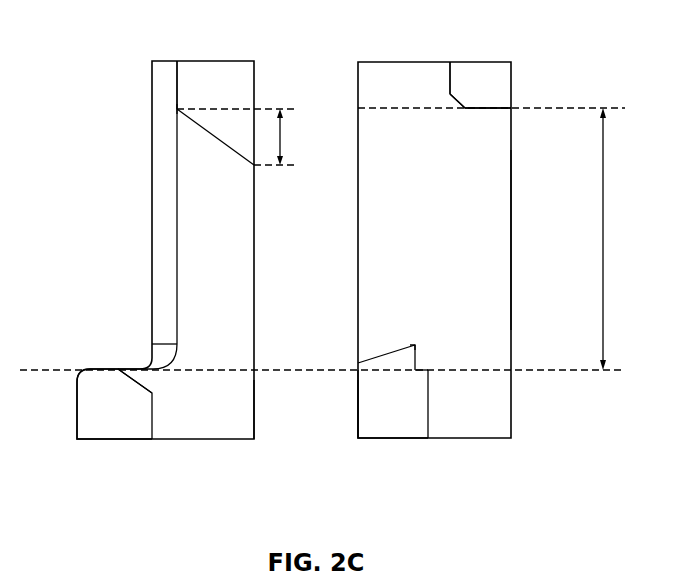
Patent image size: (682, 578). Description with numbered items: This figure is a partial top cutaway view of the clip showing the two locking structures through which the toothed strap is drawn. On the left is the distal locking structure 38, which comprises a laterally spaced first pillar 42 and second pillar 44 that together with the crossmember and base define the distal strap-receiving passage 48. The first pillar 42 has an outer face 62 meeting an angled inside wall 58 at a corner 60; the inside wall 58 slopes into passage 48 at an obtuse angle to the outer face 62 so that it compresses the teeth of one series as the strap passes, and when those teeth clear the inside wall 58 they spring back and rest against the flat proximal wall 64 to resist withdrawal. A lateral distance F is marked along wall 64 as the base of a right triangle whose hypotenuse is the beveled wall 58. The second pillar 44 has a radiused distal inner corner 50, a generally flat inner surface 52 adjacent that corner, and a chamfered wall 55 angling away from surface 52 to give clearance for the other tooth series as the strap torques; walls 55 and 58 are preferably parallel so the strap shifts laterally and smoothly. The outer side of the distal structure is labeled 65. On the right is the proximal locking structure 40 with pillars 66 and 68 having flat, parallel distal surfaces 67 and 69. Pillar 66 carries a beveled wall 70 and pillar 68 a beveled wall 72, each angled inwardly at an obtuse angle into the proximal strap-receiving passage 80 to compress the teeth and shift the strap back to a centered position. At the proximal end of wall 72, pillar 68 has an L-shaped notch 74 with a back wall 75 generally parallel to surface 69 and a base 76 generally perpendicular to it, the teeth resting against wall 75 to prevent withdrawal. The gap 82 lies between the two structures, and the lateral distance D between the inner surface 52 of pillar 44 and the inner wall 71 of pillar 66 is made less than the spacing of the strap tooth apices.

The distal locking structure 38 is at (118, 249).
The proximal locking structure 40 is at (530, 443).
The first pillar 42 is at (213, 98).
The second pillar 44 is at (106, 413).
The distal strap-receiving passage 48 is at (209, 253).
The distal inner corner 50 is at (84, 369).
The flat inner surface 52 is at (102, 369).
The chamfered wall 55 is at (140, 378).
The inside wall 58 is at (212, 135).
The corner 60 is at (177, 109).
The outer face 62 is at (177, 83).
The flat proximal wall 64 is at (256, 110).
The outer side wall of first segment 65 is at (254, 417).
The pillar 66 is at (469, 93).
The distal surface 67 is at (448, 78).
The pillar 68 is at (386, 417).
The distal surface 69 is at (358, 402).
The beveled wall 70 is at (467, 110).
The inner wall 71 is at (501, 112).
The beveled wall 72 is at (398, 347).
The proximal notch 74 is at (432, 355).
The back wall 75 is at (424, 348).
The base 76 is at (424, 368).
The proximal strap-receiving passage 80 is at (524, 243).
The gap 82 is at (303, 352).
The lateral distance F is at (280, 138).
The lateral distance D is at (605, 232).